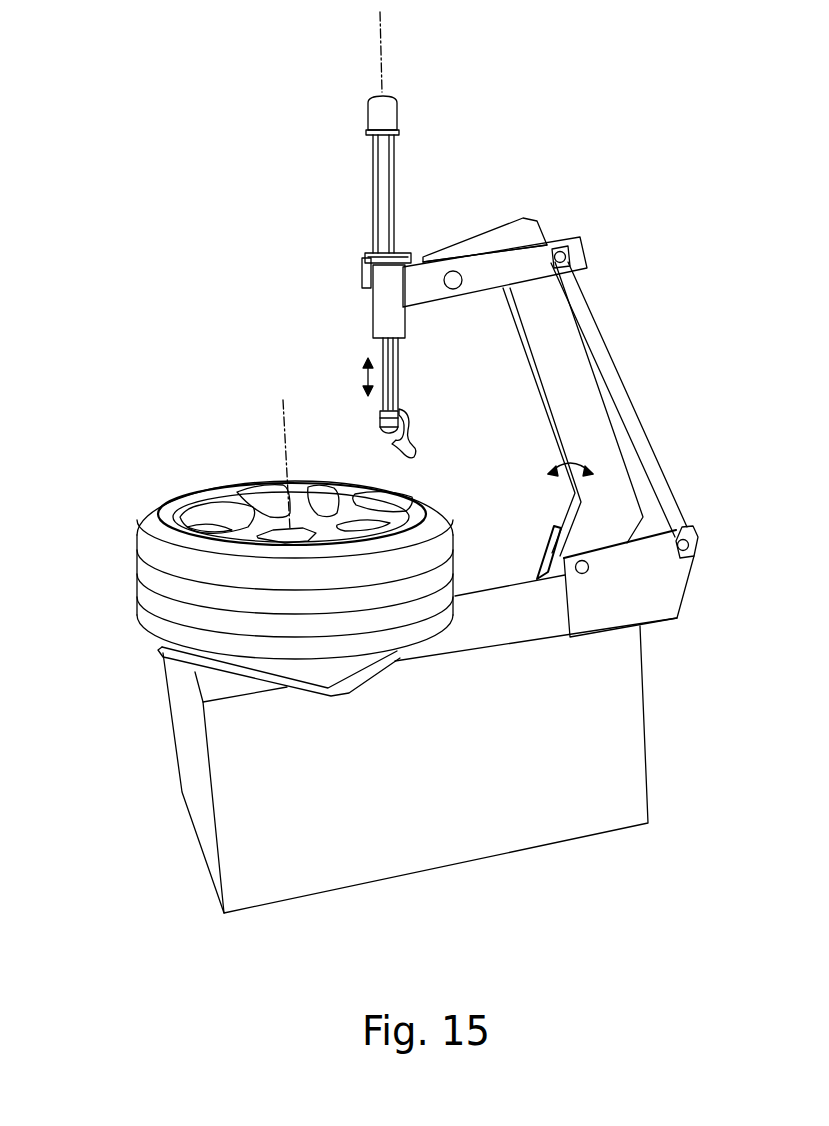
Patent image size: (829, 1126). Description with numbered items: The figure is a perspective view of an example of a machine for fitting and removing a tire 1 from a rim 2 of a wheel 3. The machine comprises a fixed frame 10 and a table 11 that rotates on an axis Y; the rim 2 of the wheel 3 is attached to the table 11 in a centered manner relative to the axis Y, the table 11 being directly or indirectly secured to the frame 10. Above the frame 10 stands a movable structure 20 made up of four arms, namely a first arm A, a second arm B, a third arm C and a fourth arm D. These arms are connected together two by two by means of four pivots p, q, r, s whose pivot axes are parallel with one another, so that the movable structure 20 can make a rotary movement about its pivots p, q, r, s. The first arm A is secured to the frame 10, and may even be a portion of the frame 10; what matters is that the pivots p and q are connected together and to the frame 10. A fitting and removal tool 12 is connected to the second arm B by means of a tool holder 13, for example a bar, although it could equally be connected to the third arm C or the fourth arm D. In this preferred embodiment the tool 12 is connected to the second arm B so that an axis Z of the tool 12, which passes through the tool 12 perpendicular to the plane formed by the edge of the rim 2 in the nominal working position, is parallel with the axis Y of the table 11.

The tire 1 is at (147, 573).
The rim 2 is at (178, 518).
The wheel 3 is at (118, 512).
The fixed frame 10 is at (633, 767).
The table 11 is at (342, 675).
The fitting and removal tool 12 is at (413, 447).
The tool holder 13 is at (391, 373).
The movable structure 20 is at (584, 194).
The first arm A is at (667, 592).
The second arm B is at (527, 265).
The third arm C is at (552, 393).
The fourth arm D is at (610, 373).
The pivot p is at (588, 572).
The pivot q is at (690, 546).
The pivot r is at (567, 257).
The pivot s is at (455, 289).
The axis Y is at (274, 464).
The axis Z is at (364, 50).